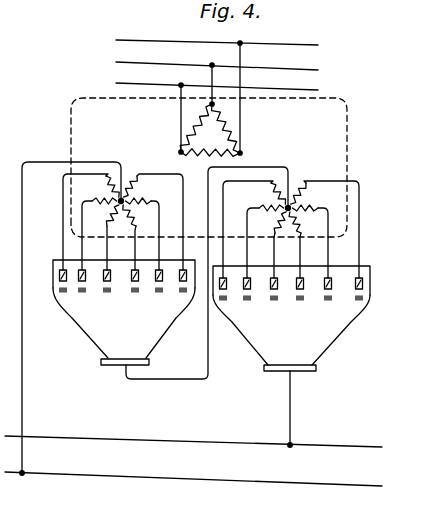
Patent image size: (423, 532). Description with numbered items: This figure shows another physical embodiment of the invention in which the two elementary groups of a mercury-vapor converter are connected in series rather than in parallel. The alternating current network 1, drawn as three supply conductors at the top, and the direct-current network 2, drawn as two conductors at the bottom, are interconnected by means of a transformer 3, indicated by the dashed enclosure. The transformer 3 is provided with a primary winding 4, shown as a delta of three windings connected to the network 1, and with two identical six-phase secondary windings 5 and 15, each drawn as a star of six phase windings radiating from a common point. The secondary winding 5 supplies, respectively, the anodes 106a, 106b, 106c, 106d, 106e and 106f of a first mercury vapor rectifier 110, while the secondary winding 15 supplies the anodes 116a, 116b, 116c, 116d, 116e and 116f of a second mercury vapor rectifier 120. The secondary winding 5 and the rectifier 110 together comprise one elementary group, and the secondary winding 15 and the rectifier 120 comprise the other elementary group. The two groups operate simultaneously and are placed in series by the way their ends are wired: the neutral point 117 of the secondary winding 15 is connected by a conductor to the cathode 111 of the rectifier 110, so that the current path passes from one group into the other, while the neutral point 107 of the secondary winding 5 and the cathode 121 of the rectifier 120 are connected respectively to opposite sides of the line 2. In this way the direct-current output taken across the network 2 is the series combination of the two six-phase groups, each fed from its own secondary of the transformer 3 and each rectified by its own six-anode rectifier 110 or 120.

The alternating current network 1 is at (322, 45).
The direct-current network 2 is at (385, 443).
The transformer 3 is at (349, 153).
The primary winding 4 is at (226, 125).
The secondary winding 5 is at (126, 197).
The secondary winding 15 is at (291, 203).
The neutral point 107 is at (118, 198).
The neutral point 117 is at (285, 206).
The anode 106a is at (59, 272).
The anode 106b is at (85, 272).
The anode 106c is at (110, 272).
The anode 106d is at (138, 272).
The anode 106e is at (162, 272).
The anode 106f is at (186, 272).
The anode 116a is at (226, 286).
The anode 116b is at (250, 280).
The anode 116c is at (277, 280).
The anode 116d is at (303, 280).
The anode 116e is at (331, 280).
The anode 116f is at (362, 280).
The mercury vapor rectifier 110 is at (89, 333).
The cathode 111 is at (113, 367).
The mercury vapor rectifier 120 is at (243, 333).
The cathode 121 is at (281, 371).